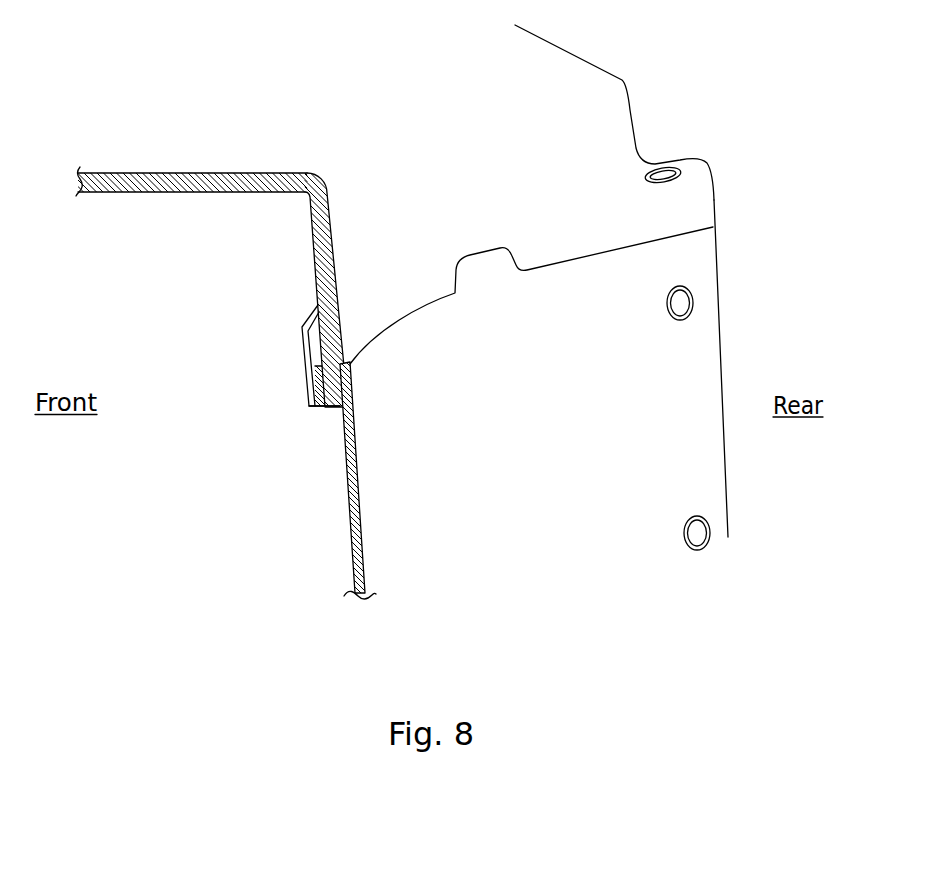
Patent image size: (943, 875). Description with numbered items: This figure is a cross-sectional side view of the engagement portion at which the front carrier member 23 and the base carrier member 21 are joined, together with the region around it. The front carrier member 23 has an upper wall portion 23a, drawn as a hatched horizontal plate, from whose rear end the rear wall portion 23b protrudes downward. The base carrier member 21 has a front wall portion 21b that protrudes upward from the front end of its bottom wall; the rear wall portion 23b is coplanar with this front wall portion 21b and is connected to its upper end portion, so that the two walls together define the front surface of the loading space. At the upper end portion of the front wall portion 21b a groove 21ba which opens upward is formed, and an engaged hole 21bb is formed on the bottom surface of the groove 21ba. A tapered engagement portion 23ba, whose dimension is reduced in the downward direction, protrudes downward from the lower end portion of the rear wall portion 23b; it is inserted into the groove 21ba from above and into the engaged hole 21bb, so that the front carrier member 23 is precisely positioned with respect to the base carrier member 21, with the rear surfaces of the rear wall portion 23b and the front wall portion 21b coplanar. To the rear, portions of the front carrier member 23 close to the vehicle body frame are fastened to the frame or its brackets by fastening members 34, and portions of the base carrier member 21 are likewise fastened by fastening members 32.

The base carrier member 21 is at (716, 263).
The front wall portion 21b is at (372, 502).
The groove 21ba is at (304, 358).
The engaged hole 21bb is at (339, 408).
The front carrier member 23 is at (708, 163).
The upper wall portion 23a is at (178, 148).
The rear wall portion 23b is at (347, 230).
The engagement portion 23ba is at (312, 376).
The fastening members 32 is at (688, 300).
The fastening members 34 is at (662, 166).